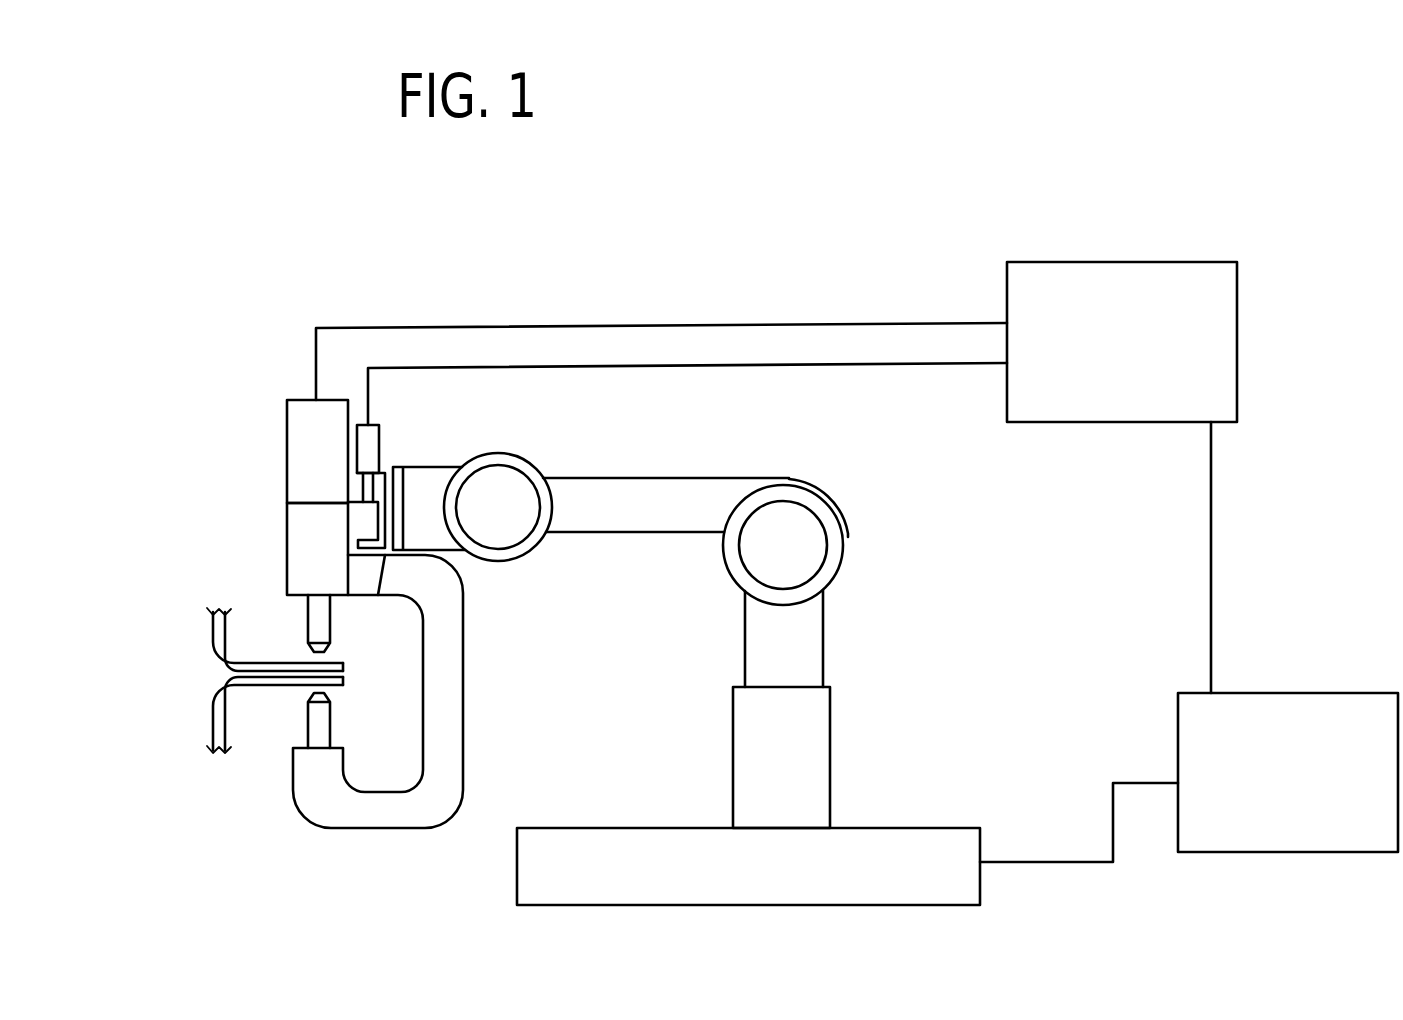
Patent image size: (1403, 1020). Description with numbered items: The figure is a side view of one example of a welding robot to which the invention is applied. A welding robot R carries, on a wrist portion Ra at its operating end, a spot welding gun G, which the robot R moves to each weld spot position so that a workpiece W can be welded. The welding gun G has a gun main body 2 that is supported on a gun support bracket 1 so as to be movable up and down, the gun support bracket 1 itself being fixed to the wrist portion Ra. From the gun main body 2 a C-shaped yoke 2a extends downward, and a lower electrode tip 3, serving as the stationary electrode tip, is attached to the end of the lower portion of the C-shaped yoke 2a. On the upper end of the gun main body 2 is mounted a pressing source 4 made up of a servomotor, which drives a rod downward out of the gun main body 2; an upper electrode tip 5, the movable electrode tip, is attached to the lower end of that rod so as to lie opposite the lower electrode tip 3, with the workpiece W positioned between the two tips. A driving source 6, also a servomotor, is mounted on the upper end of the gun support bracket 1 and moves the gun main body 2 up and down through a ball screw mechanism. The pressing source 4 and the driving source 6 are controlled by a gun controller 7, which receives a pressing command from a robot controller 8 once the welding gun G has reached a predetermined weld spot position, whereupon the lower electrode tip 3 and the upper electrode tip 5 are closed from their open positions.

The gun support bracket 1 is at (385, 470).
The gun main body 2 is at (270, 502).
The C-shaped yoke 2a is at (455, 708).
The lower electrode tip 3 is at (325, 717).
The pressing source 4 is at (307, 450).
The upper electrode tip 5 is at (320, 625).
The driving source 6 is at (372, 433).
The gun controller 7 is at (1100, 282).
The robot controller 8 is at (1318, 710).
The welding gun G is at (252, 497).
The workpiece W is at (361, 674).
The welding robot R is at (686, 644).
The wrist portion Ra is at (430, 478).